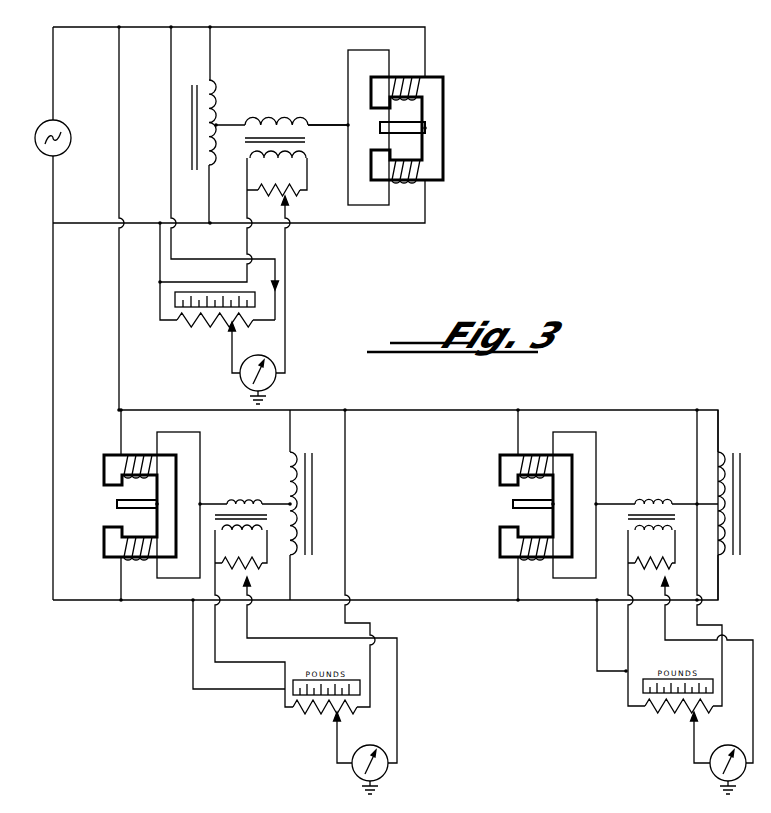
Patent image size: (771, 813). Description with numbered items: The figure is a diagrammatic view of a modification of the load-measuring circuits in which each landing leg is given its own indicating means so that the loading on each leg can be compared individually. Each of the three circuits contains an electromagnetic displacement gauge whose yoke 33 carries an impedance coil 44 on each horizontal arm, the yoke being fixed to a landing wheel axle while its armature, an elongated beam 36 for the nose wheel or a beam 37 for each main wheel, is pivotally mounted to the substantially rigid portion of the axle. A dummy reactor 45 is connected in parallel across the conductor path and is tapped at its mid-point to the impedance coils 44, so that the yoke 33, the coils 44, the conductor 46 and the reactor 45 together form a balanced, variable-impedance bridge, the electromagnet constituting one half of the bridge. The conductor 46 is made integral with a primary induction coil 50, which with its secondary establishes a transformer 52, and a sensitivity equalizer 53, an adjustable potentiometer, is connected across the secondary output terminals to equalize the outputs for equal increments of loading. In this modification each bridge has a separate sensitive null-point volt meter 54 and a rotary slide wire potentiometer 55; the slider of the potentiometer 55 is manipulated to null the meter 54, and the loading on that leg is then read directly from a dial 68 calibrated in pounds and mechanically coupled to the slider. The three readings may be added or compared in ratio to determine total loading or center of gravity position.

The yoke 33 is at (437, 143).
The beam 36 is at (415, 122).
The beam 37 is at (117, 504).
The impedance coil 44 is at (405, 77).
The reactor 45 is at (213, 90).
The conductor 46 is at (325, 125).
The primary induction coil 50 is at (262, 116).
The transformer 52 is at (307, 139).
The sensitivity equalizer 53 is at (290, 200).
The null-point volt meter 54 is at (276, 378).
The rotary slide wire potentiometer 55 is at (252, 320).
The dial 68 is at (175, 300).